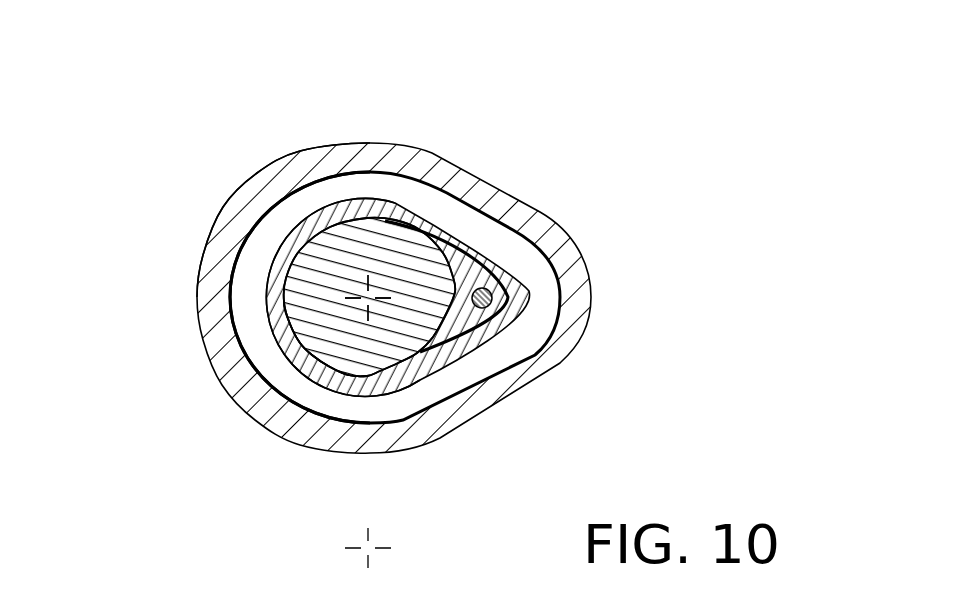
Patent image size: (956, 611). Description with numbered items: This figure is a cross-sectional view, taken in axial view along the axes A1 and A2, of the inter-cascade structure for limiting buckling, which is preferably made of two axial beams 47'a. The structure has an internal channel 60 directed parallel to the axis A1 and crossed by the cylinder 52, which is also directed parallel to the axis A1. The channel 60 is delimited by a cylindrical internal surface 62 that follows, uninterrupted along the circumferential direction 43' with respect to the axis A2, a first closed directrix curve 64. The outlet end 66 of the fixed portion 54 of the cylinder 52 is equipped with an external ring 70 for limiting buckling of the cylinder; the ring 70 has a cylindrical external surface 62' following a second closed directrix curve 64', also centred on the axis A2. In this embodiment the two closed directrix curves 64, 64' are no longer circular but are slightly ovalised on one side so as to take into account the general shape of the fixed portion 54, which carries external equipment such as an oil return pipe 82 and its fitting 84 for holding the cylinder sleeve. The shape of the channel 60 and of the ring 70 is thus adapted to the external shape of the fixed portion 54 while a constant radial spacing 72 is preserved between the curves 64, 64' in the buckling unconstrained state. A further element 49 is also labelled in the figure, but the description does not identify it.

The circumferential direction 43' is at (225, 220).
The first closed directrix curve 64 is at (268, 201).
The axial beam 47'a is at (394, 263).
The second closed directrix curve 64' is at (397, 219).
The cylindrical external surface 62' is at (397, 233).
The housing 49 is at (393, 141).
The constant radial spacing 72 is at (440, 229).
The external ring 70 is at (492, 244).
The oil return pipe 82 is at (492, 293).
The fitting 84 is at (470, 321).
The cylindrical internal surface 62 is at (239, 336).
The outlet end 66 is at (300, 310).
The cylinder 52 is at (262, 334).
The fixed portion of the cylinder 54 is at (308, 360).
The internal channel 60 is at (387, 422).
The axis A2 is at (372, 300).
The axis A1 is at (370, 548).